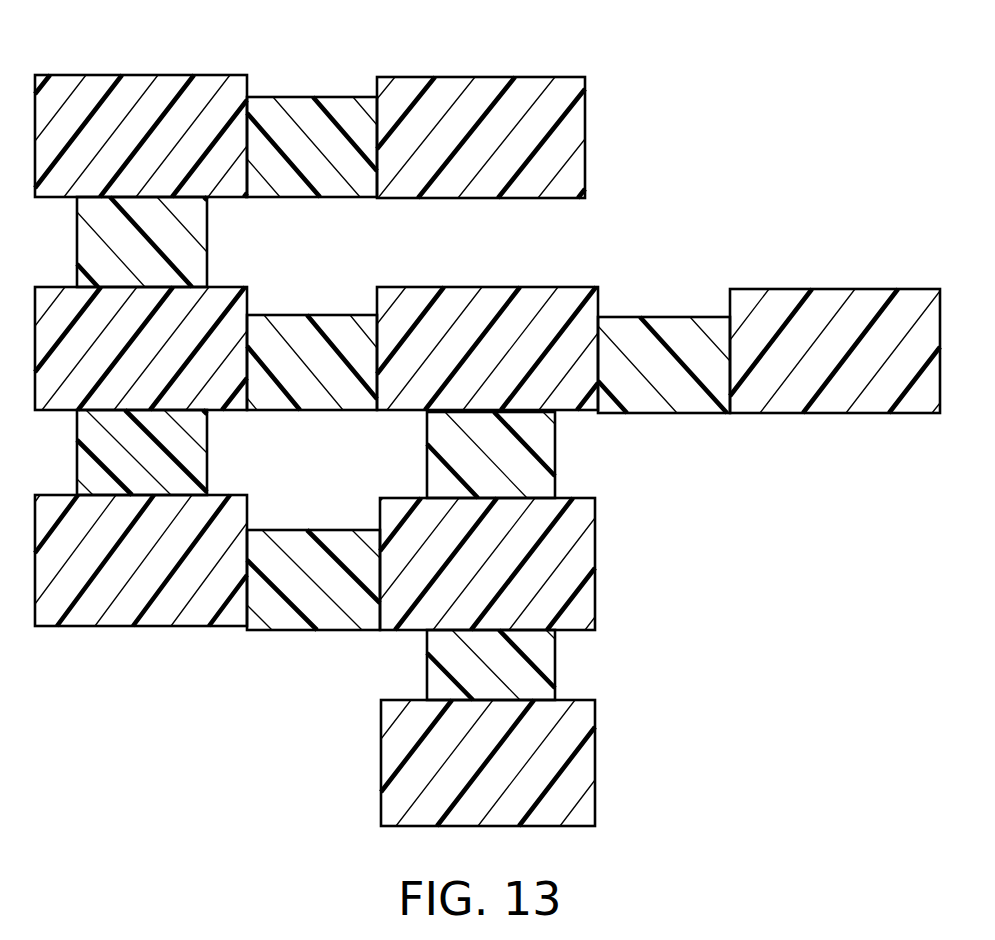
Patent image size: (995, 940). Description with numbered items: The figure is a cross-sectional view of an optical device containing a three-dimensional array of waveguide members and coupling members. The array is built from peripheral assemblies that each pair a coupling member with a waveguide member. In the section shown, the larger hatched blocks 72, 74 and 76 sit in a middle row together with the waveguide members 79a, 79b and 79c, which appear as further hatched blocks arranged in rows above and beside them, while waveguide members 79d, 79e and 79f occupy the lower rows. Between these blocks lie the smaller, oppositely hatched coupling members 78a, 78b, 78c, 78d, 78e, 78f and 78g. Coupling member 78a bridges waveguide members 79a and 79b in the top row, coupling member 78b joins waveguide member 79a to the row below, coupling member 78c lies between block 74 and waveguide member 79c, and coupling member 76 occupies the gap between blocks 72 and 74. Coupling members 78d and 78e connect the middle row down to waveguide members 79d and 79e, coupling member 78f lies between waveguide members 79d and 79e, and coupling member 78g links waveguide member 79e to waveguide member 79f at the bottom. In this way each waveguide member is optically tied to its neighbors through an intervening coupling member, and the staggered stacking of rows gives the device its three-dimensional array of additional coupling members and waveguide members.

The first block 72 is at (60, 316).
The second block 74 is at (550, 310).
The connecting block 76 is at (307, 335).
The coupling member 78a is at (322, 112).
The coupling member 78b is at (183, 240).
The coupling member 78c is at (692, 330).
The coupling member 78d is at (187, 453).
The coupling member 78e is at (543, 450).
The coupling member 78f is at (288, 612).
The coupling member 78g is at (543, 656).
The waveguide member 79a is at (160, 90).
The waveguide member 79b is at (560, 92).
The waveguide member 79c is at (828, 308).
The waveguide member 79d is at (83, 605).
The waveguide member 79e is at (577, 572).
The waveguide member 79f is at (578, 777).